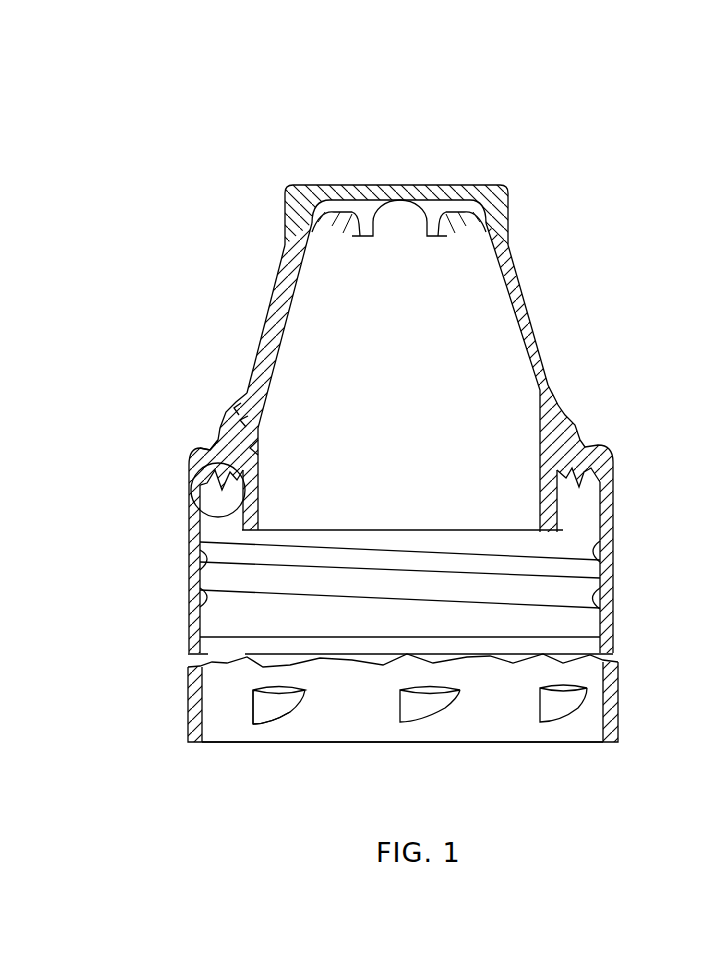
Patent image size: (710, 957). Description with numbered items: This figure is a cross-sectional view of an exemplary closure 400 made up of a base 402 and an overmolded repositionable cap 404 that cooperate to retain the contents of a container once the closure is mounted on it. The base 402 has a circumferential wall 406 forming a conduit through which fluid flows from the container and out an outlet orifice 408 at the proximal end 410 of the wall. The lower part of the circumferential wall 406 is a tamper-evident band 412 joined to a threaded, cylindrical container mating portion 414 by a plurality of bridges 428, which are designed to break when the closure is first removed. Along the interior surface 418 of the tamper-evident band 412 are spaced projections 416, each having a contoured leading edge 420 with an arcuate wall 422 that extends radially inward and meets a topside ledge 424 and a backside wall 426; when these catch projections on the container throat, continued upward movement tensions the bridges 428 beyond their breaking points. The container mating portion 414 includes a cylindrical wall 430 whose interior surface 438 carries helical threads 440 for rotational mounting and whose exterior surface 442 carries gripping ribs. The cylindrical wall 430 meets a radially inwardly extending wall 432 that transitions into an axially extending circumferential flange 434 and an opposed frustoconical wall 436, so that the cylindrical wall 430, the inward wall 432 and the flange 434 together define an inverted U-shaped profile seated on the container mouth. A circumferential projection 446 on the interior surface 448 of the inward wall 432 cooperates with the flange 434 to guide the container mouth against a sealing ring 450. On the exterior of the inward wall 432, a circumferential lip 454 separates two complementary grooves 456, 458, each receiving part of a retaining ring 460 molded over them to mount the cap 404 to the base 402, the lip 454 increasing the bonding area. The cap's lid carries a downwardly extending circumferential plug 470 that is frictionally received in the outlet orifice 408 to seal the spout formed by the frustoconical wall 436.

The closure 400 is at (168, 223).
The base 402 is at (522, 317).
The overmolded repositionable cap 404 is at (489, 190).
The circumferential wall 406 is at (604, 594).
The outlet orifice 408 is at (403, 247).
The proximal end 410 is at (293, 175).
The tamper-evident band 412 is at (520, 730).
The container mating portion 414 is at (333, 625).
The projection 416 is at (420, 710).
The interior surface 418 is at (487, 733).
The contoured leading edge 420 is at (303, 698).
The arcuate wall 422 is at (273, 708).
The topside ledge 424 is at (427, 693).
The backside wall 426 is at (250, 710).
The bridges 428 is at (212, 668).
The cylindrical wall 430 is at (604, 508).
The radially inwardly extending wall 432 is at (606, 460).
The circumferential flange 434 is at (552, 508).
The frustoconical wall 436 is at (272, 358).
The interior surface 438 is at (592, 620).
The helical threads 440 is at (455, 588).
The exterior surface 442 is at (192, 566).
The circumferential projection 446 is at (190, 467).
The interior surface 448 is at (208, 517).
The sealing ring 450 is at (220, 442).
The circumferential lip 454 is at (265, 438).
The circumferential groove 456 is at (224, 437).
The circumferential groove 458 is at (250, 418).
The retaining ring 460 is at (236, 410).
The circumferential plug 470 is at (362, 236).